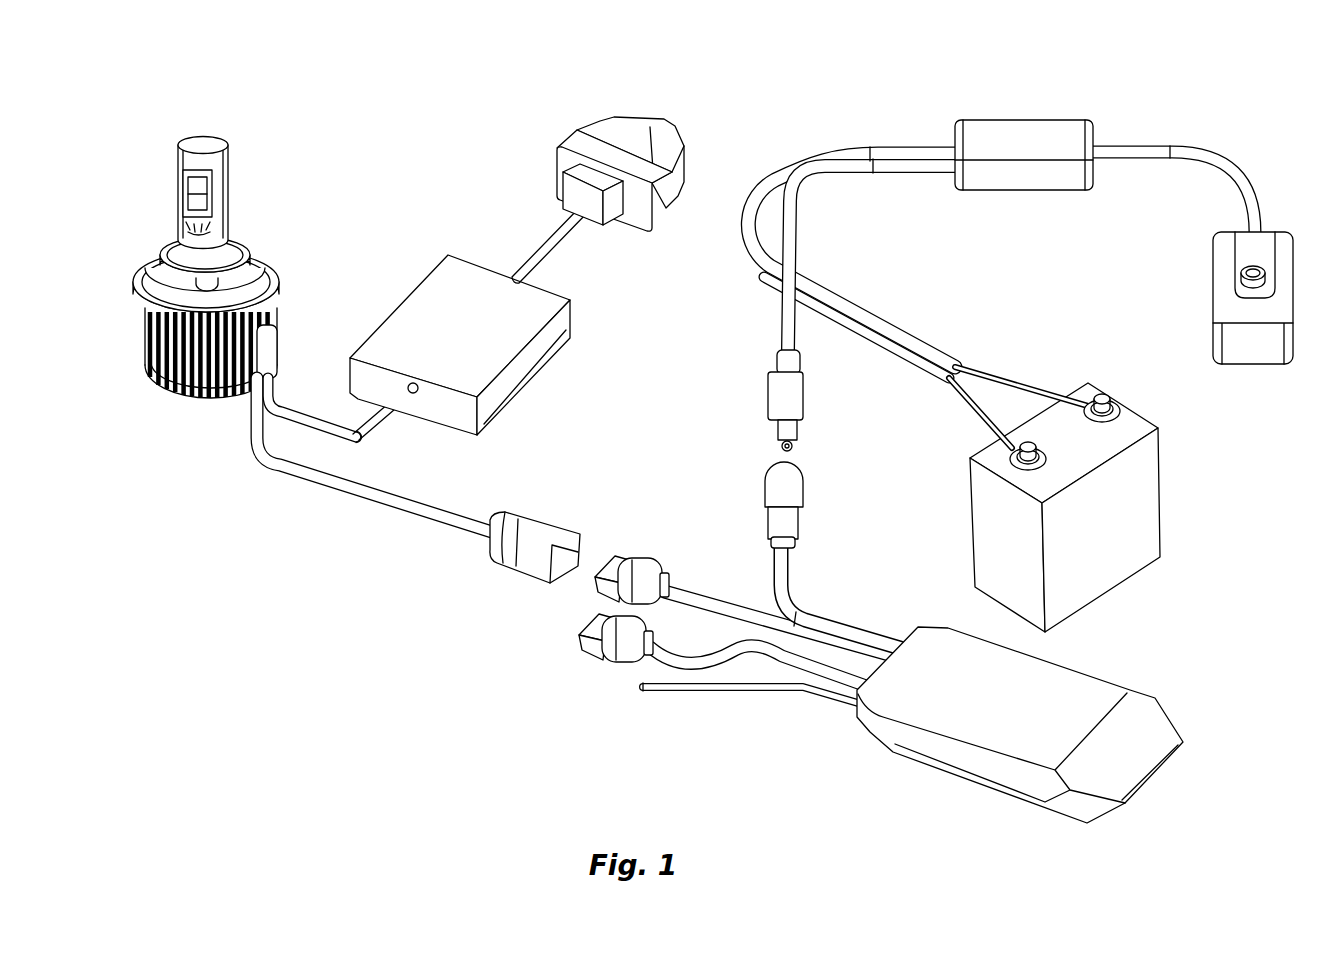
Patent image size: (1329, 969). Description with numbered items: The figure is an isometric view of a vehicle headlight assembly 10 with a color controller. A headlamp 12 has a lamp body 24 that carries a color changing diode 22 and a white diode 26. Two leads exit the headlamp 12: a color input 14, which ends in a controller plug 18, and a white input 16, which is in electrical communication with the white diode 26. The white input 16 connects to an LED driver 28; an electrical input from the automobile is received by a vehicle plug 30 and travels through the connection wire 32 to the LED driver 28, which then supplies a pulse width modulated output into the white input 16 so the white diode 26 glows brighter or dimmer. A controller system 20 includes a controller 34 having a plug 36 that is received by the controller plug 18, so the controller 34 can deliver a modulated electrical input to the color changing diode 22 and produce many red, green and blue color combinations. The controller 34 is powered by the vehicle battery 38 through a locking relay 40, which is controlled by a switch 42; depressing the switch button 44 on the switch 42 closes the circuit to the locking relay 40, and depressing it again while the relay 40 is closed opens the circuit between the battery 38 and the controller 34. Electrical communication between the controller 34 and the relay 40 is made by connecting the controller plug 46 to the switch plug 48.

The vehicle headlight assembly 10 is at (783, 75).
The headlamp 12 is at (307, 237).
The color input 14 is at (410, 513).
The white input 16 is at (317, 428).
The controller plug 18 is at (522, 565).
The controller system 20 is at (1203, 100).
The color changing diode 22 is at (202, 190).
The lamp body 24 is at (224, 160).
The white diode 26 is at (203, 204).
The LED driver 28 is at (405, 333).
The vehicle plug 30 is at (583, 140).
The connection wire 32 is at (545, 243).
The controller 34 is at (953, 752).
The plug 36 is at (640, 567).
The vehicle battery 38 is at (1123, 553).
The locking relay 40 is at (1010, 140).
The switch 42 is at (1225, 305).
The switch button 44 is at (1247, 278).
The controller plug 46 is at (777, 485).
The switch plug 48 is at (777, 398).